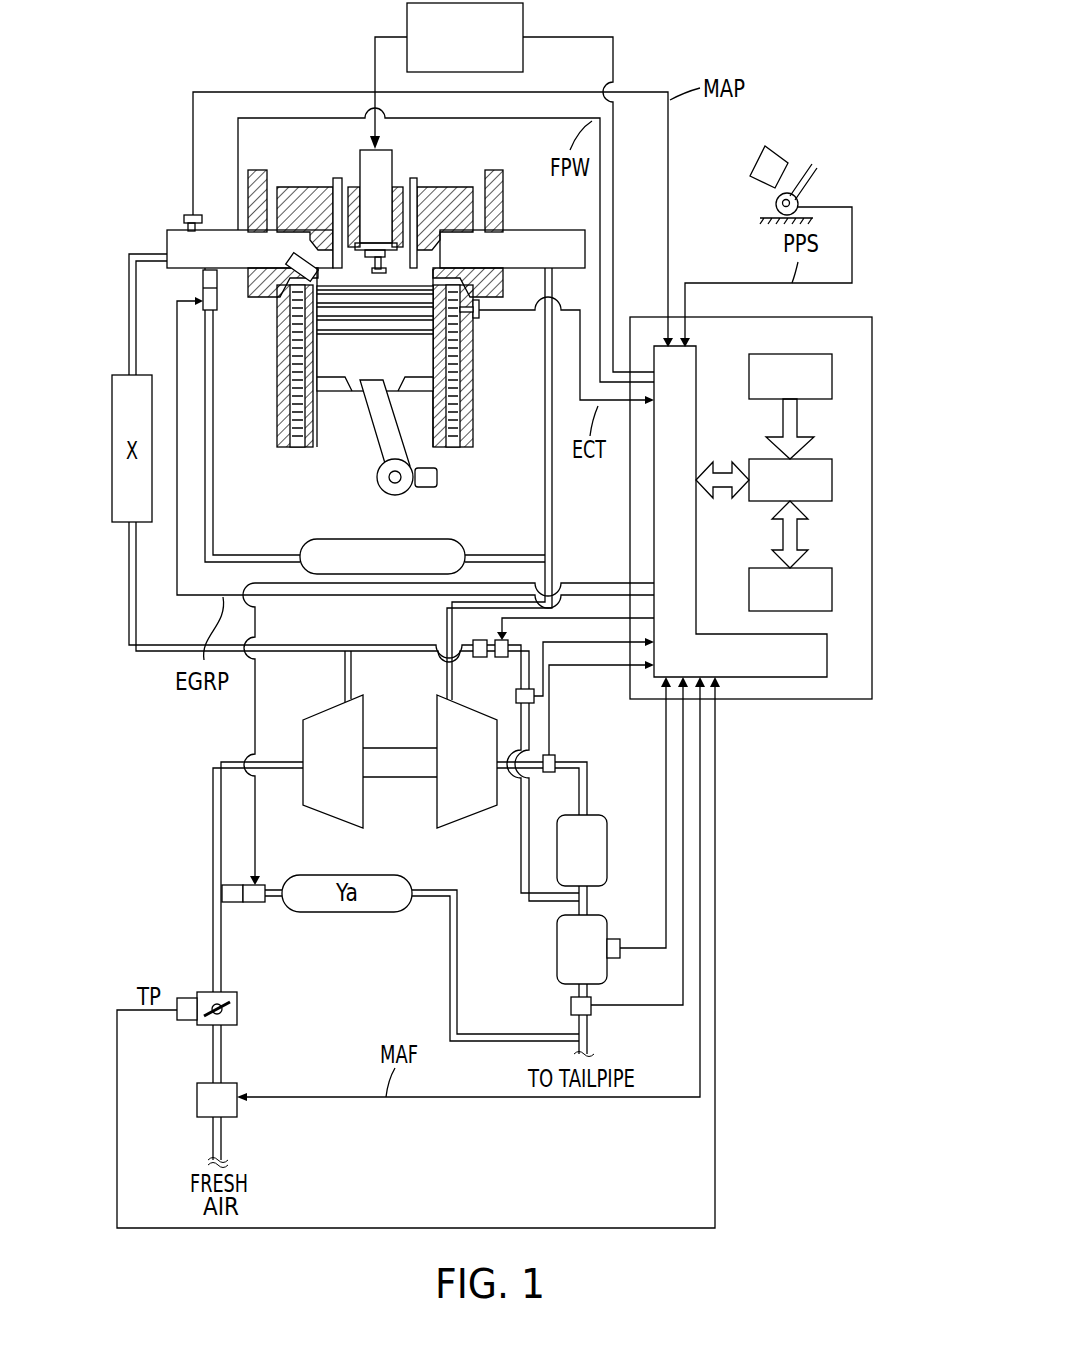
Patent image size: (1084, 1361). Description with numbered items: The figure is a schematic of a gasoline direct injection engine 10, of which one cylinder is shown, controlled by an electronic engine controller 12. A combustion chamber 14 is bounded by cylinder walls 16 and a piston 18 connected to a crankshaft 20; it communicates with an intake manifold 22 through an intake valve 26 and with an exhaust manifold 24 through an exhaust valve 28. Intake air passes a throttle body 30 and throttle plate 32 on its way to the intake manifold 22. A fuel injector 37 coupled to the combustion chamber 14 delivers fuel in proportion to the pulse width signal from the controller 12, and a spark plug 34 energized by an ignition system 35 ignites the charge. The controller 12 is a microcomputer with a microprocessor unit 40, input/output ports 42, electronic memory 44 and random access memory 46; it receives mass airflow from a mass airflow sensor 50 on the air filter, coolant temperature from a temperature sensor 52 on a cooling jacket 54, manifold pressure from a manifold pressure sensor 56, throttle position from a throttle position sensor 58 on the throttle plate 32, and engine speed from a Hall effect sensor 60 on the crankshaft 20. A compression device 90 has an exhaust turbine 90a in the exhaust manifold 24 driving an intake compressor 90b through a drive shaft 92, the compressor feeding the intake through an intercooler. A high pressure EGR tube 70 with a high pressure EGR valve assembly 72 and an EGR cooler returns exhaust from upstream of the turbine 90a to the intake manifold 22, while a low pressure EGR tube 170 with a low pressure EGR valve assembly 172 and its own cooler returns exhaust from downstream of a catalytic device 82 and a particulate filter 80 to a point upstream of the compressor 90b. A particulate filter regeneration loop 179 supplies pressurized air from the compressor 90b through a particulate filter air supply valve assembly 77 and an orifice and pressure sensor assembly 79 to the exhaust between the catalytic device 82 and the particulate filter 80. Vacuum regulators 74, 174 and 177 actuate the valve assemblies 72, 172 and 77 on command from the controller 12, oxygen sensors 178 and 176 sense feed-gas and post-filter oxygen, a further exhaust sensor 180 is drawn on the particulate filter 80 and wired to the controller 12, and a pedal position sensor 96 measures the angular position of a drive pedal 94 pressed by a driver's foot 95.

The internal combustion engine 10 is at (284, 469).
The electronic engine controller 12 is at (862, 317).
The combustion chamber 14 is at (345, 279).
The cylinder walls 16 is at (313, 437).
The piston 18 is at (358, 362).
The crankshaft 20 is at (393, 490).
The intake manifold 22 is at (225, 261).
The exhaust manifold 24 is at (524, 261).
The intake valve 26 is at (335, 180).
The exhaust valve 28 is at (416, 180).
The throttle body 30 is at (238, 989).
The throttle plate 32 is at (206, 1003).
The spark plug 34 is at (372, 162).
The ignition system 35 is at (523, 21).
The fuel injector 37 is at (310, 262).
The microprocessor unit 40 is at (812, 459).
The input/output ports 42 is at (698, 350).
The electronic memory 44 is at (834, 376).
The random access memory 46 is at (812, 568).
The mass airflow sensor 50 is at (237, 1092).
The temperature sensor 52 is at (484, 314).
The cooling jacket 54 is at (462, 402).
The manifold pressure sensor 56 is at (184, 218).
The throttle position sensor 58 is at (188, 1022).
The Hall effect sensor 60 is at (427, 488).
The high pressure EGR tube 70 is at (243, 552).
The high pressure EGR valve assembly 72 is at (218, 288).
The vacuum regulator 74 is at (190, 300).
The particulate filter air supply valve assembly 77 is at (502, 660).
The orifice and pressure sensor assembly 79 is at (536, 700).
The particulate filter 80 is at (591, 962).
The catalytic device 82 is at (591, 859).
The compression device 90 is at (329, 756).
The exhaust turbine 90a is at (482, 773).
The intake compressor 90b is at (348, 773).
The drive shaft 92 is at (392, 747).
The drive pedal 94 is at (815, 168).
The driver's foot 95 is at (765, 165).
The pedal position sensor 96 is at (778, 207).
The low pressure EGR tube 170 is at (450, 955).
The low pressure EGR valve assembly 172 is at (253, 905).
The vacuum regulator 174 is at (226, 893).
The oxygen sensor 176 is at (592, 1008).
The vacuum regulator 177 is at (480, 640).
The oxygen sensor 178 is at (556, 757).
The particulate filter regeneration loop 179 is at (523, 893).
The exhaust sensor 180 is at (613, 938).